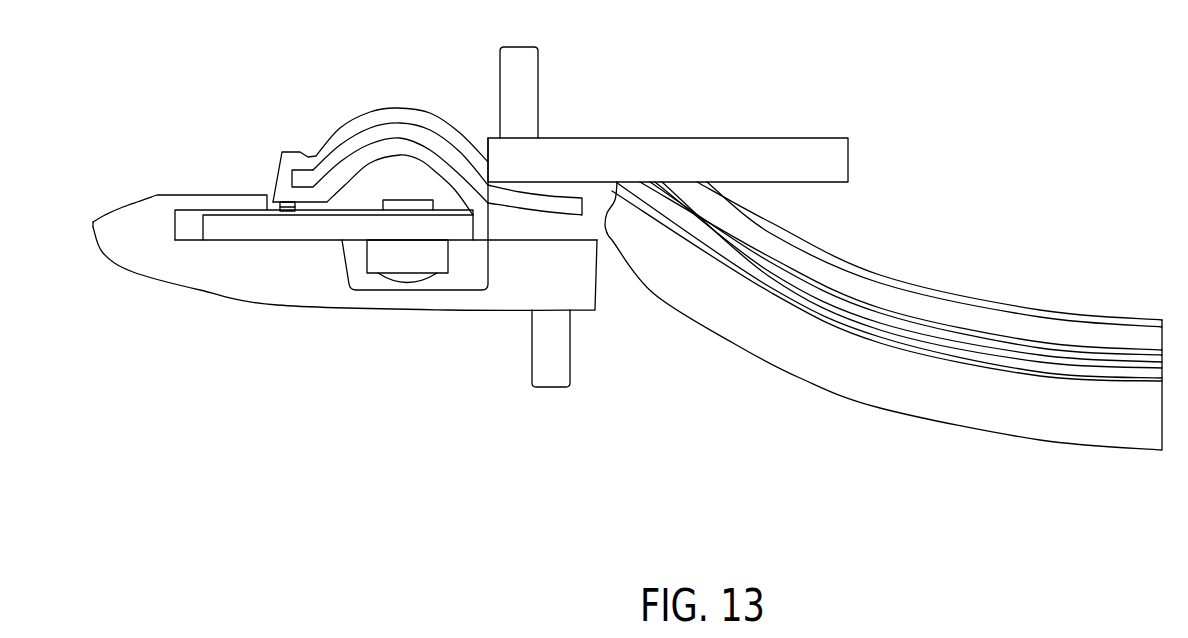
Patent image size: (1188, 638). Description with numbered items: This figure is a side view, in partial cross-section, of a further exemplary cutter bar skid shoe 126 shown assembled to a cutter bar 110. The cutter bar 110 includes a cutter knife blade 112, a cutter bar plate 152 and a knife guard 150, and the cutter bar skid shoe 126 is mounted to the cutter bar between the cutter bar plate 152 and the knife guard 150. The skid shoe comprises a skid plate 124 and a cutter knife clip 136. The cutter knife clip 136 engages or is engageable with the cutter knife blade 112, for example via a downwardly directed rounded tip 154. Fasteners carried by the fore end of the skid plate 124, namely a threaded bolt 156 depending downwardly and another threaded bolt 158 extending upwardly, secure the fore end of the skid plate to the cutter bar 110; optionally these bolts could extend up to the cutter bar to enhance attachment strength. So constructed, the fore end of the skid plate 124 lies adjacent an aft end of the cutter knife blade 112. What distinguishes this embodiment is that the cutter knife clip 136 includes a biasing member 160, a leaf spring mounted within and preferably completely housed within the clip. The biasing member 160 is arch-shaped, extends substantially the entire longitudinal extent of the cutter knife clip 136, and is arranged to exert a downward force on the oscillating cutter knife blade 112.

The cutter bar 110 is at (170, 296).
The cutter knife blade 112 is at (235, 227).
The skid plate 124 is at (905, 418).
The cutter bar skid shoe 126 is at (980, 248).
The cutter knife clip 136 is at (412, 108).
The knife guard 150 is at (282, 305).
The cutter bar plate 152 is at (688, 137).
The rounded tip 154 is at (287, 215).
The threaded bolt 156 is at (530, 360).
The threaded bolt 158 is at (540, 92).
The biasing member 160 is at (387, 120).